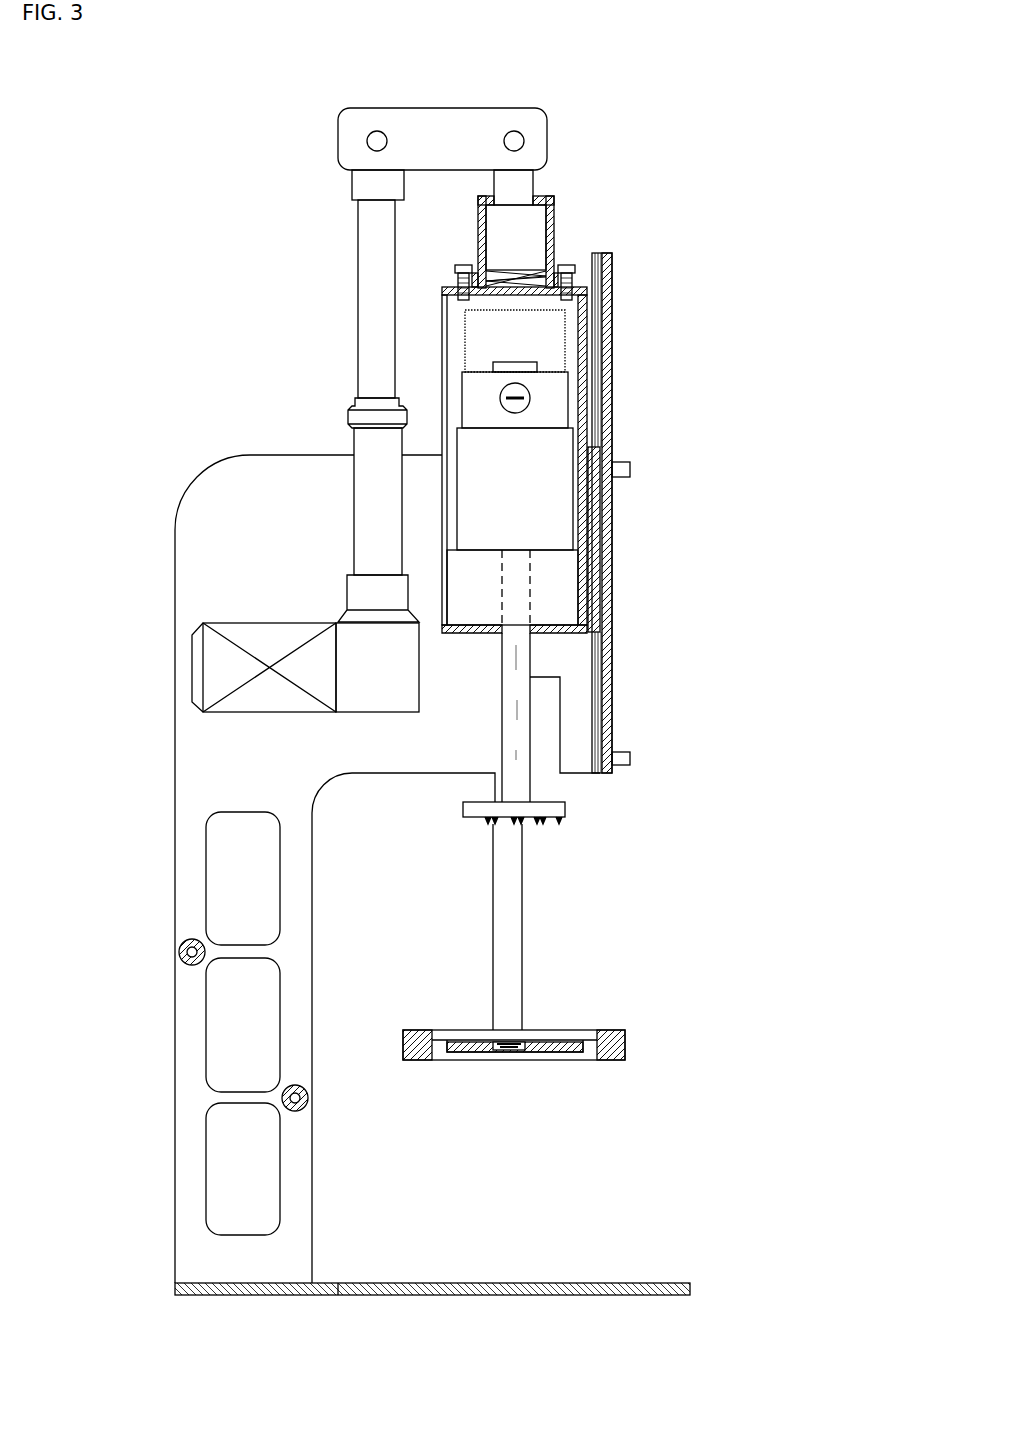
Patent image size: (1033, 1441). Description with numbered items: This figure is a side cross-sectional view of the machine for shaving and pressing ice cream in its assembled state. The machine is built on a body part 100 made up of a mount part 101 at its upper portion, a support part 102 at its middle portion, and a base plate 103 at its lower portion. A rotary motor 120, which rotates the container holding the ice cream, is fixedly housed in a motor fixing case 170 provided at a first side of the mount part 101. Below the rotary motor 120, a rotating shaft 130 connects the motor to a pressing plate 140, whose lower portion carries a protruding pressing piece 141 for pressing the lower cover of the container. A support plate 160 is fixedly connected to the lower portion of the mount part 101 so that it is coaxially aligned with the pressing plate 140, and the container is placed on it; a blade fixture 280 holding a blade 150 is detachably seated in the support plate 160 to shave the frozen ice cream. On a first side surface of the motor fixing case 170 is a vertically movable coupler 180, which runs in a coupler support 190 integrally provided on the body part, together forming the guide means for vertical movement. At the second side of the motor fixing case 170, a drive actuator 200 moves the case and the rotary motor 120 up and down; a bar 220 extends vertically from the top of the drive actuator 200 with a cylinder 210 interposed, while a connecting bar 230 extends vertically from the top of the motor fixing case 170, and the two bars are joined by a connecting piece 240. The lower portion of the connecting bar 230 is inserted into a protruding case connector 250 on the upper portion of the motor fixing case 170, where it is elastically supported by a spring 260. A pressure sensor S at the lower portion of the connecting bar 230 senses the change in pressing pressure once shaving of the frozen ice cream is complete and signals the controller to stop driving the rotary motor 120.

The body part 100 is at (166, 322).
The mount part 101 is at (235, 492).
The support part 102 is at (190, 850).
The base plate 103 is at (650, 1283).
The rotary motor 120 is at (560, 500).
The rotating shaft 130 is at (522, 656).
The pressing plate 140 is at (560, 815).
The protruding pressing piece 141 is at (545, 825).
The blade 150 is at (515, 1050).
The support plate 160 is at (625, 1040).
The motor fixing case 170 is at (452, 290).
The vertically movable coupler 180 is at (596, 575).
The coupler support 190 is at (603, 410).
The drive actuator 200 is at (270, 640).
The cylinder 210 is at (358, 488).
The bar 220 is at (370, 352).
The connecting bar 230 is at (514, 214).
The connecting piece 240 is at (445, 120).
The case connector 250 is at (557, 232).
The spring 260 is at (573, 277).
The blade fixture 280 is at (555, 1052).
The pressure sensor S is at (500, 274).